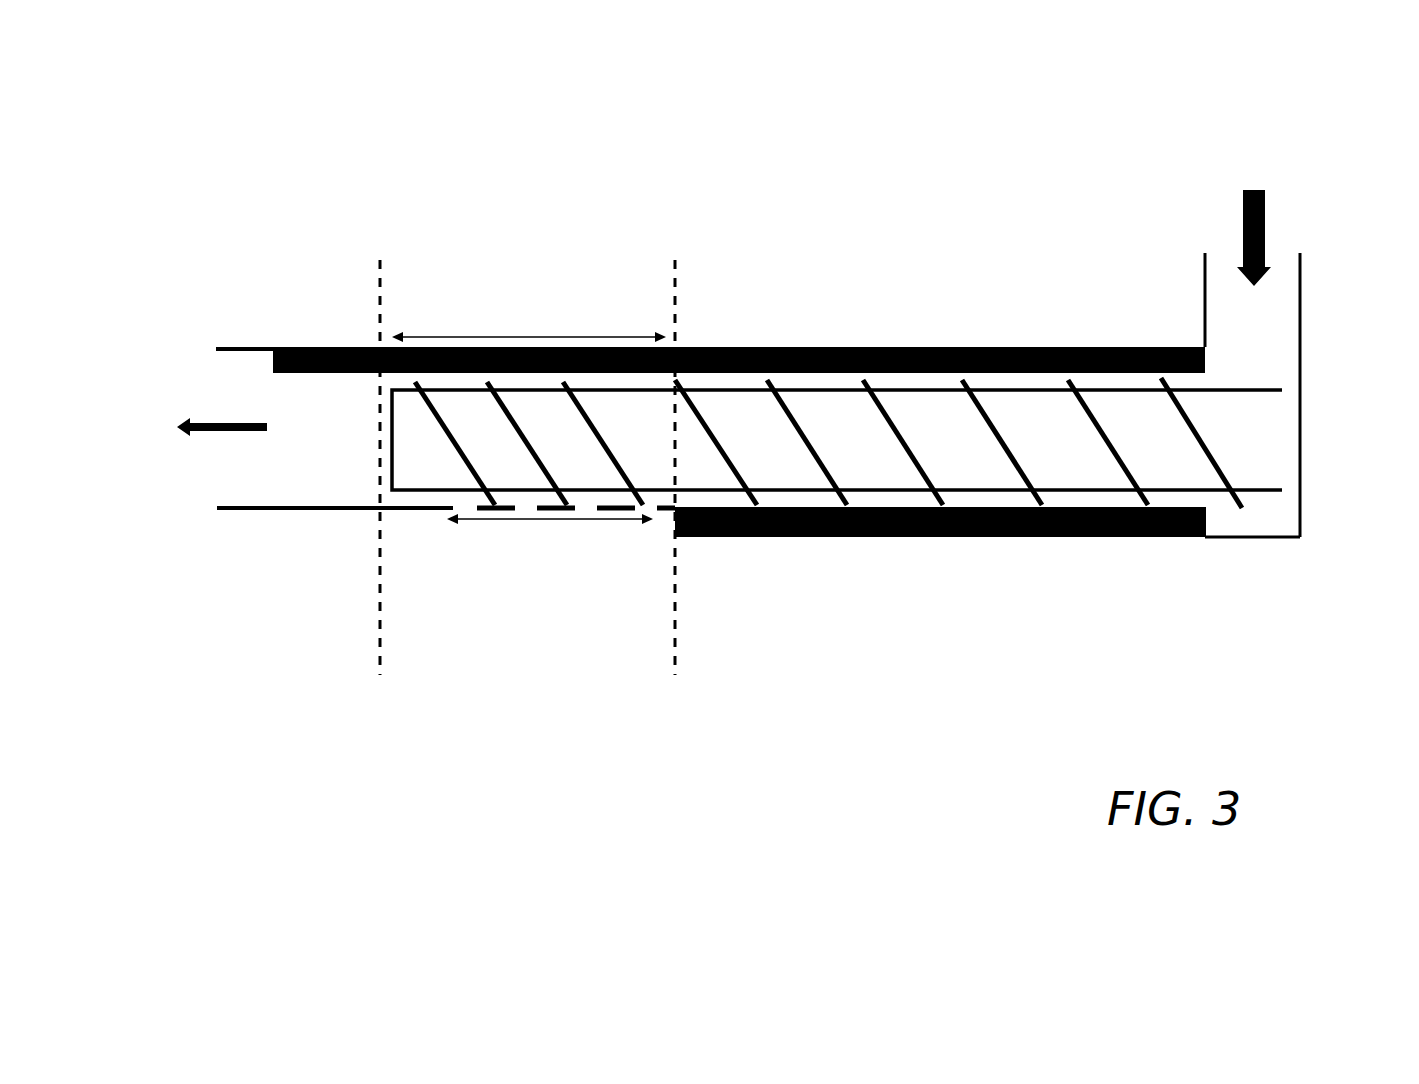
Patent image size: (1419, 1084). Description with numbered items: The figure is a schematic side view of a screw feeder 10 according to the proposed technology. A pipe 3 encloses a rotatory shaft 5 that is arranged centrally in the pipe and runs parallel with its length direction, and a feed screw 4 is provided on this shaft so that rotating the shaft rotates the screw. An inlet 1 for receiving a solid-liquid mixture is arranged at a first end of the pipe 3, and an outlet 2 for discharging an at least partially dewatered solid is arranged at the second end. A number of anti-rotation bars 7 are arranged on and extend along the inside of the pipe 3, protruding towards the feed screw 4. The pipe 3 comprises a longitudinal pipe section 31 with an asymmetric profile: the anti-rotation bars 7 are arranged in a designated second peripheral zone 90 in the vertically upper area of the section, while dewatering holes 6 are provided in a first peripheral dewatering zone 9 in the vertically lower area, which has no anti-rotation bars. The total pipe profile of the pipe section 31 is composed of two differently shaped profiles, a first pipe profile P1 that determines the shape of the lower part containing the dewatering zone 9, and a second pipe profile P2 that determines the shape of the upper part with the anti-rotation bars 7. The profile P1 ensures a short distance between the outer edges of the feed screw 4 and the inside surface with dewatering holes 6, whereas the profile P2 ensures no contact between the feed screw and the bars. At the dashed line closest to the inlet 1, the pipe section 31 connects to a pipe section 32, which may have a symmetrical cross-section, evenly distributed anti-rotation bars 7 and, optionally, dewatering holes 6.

The inlet 1 is at (1282, 260).
The outlet 2 is at (211, 405).
The pipe 3 is at (1253, 537).
The feed screw 4 is at (578, 405).
The rotatory shaft 5 is at (1185, 447).
The dewatering holes 6 is at (472, 510).
The anti-rotation bars 7 is at (878, 346).
The first peripheral zone 9 is at (525, 532).
The second peripheral zone 90 is at (485, 333).
The screw feeder 10 is at (162, 716).
The longitudinal pipe section 31 is at (617, 627).
The pipe section 32 is at (740, 550).
The first pipe profile P1 is at (355, 507).
The second pipe profile P2 is at (250, 347).